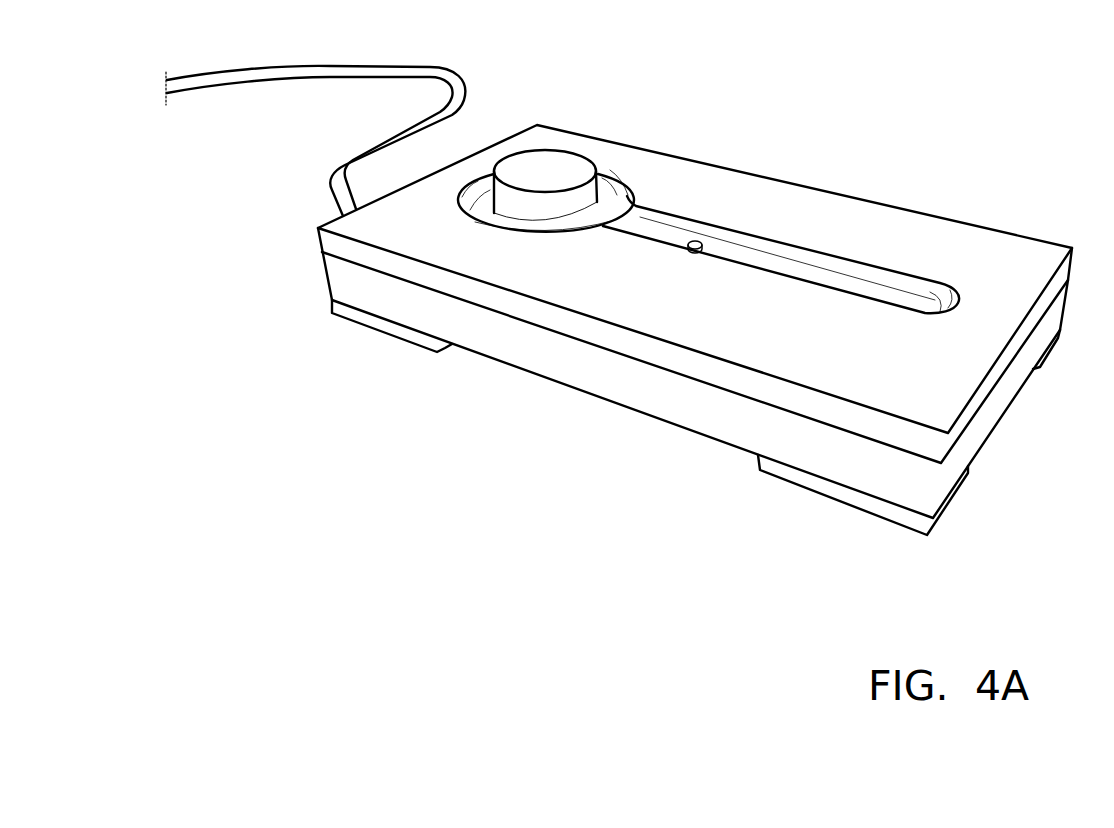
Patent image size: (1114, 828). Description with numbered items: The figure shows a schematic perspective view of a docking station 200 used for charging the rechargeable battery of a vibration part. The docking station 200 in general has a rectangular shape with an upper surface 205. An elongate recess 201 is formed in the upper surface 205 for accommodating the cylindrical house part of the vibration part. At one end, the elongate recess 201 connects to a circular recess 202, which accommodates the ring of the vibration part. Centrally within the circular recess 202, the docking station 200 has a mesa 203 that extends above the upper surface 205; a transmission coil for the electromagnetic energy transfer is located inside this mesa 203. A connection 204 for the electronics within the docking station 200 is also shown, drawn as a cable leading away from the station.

The docking station 200 is at (428, 471).
The elongate recess 201 is at (850, 287).
The circular recess 202 is at (613, 203).
The mesa 203 is at (556, 150).
The connection 204 is at (267, 79).
The upper surface 205 is at (1012, 262).